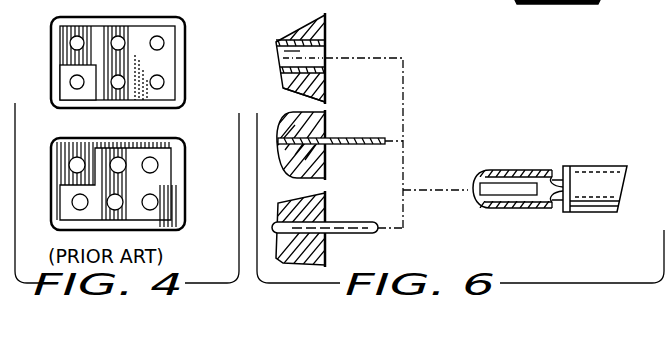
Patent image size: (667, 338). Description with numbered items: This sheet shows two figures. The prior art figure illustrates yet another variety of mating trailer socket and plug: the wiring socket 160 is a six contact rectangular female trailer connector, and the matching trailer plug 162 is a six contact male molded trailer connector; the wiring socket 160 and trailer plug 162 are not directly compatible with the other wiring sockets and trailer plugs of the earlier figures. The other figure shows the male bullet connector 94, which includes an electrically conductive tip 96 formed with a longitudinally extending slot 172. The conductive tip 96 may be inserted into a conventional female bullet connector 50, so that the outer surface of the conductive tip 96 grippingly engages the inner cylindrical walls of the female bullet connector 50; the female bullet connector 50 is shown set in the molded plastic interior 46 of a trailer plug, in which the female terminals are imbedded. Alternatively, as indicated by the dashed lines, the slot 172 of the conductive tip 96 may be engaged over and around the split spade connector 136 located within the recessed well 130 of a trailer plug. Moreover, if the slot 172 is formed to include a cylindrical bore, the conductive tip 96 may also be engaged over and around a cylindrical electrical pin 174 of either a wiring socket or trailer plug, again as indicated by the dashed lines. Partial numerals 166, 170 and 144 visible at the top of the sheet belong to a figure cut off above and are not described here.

In FIG. 4, the wiring socket 160 is at (181, 49).
In FIG. 4, the trailer plug 162 is at (181, 160).
In FIG. 6, the female bullet connector 50 is at (327, 46).
In FIG. 6, the molded plastic interior 46 is at (316, 84).
In FIG. 6, the recessed well 130 is at (321, 163).
In FIG. 6, the split spade connector 136 is at (343, 140).
In FIG. 6, the cylindrical electrical pin 174 is at (362, 240).
In FIG. 6, the slot 172 is at (455, 188).
In FIG. 6, the conductive tip 96 is at (537, 150).
In FIG. 6, the male bullet connector 94 is at (626, 150).
In FIG. 6, the element 166 is at (405, 6).
In FIG. 6, the element 170 is at (472, 6).
In FIG. 6, the element 144 is at (528, 7).